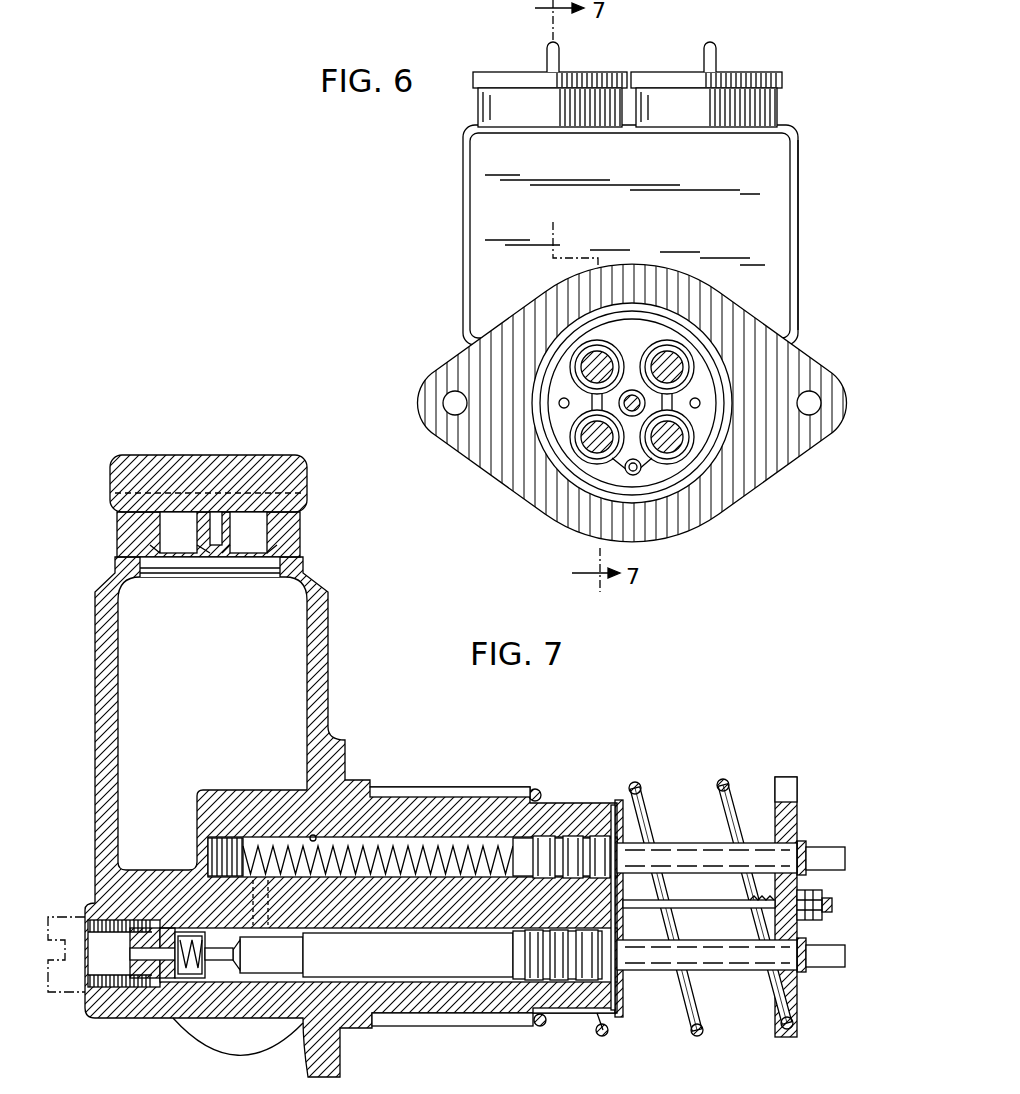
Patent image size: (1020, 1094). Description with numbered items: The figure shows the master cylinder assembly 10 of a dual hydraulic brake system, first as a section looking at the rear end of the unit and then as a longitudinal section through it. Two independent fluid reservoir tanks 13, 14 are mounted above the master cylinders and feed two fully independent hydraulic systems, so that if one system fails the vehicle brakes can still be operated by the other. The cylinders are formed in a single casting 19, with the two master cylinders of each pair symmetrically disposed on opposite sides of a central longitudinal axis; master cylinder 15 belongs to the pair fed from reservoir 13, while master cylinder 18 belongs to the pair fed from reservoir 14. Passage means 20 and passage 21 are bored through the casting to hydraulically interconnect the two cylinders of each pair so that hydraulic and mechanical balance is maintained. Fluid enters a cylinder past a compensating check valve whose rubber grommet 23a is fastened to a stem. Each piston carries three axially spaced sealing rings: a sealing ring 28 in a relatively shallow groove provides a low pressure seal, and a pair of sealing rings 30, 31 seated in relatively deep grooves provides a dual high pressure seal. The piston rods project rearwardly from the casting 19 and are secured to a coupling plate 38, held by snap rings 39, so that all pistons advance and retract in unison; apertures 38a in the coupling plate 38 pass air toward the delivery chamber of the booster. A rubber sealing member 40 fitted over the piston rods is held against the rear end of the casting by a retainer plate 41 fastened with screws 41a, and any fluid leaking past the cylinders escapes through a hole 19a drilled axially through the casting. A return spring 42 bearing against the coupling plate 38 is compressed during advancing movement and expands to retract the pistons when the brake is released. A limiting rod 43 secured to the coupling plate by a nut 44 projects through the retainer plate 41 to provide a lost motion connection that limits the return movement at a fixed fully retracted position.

In FIG. 6, the master cylinder assembly 10 is at (718, 460).
In FIG. 7, the master cylinder assembly 10 is at (402, 765).
In FIG. 6, the fluid reservoir tank 13 is at (463, 197).
In FIG. 7, the fluid reservoir tank 13 is at (329, 630).
In FIG. 6, the fluid reservoir tank 14 is at (800, 202).
In FIG. 7, the master cylinder 15 is at (437, 790).
In FIG. 7, the master cylinder 18 is at (435, 1018).
In FIG. 7, the casting 19 is at (90, 905).
In FIG. 6, the hole 19a is at (640, 478).
In FIG. 7, the passage means 20 is at (286, 872).
In FIG. 7, the passage 21 is at (250, 940).
In FIG. 7, the rubber grommet 23a is at (313, 836).
In FIG. 7, the sealing ring 28 is at (600, 830).
In FIG. 7, the sealing ring 30 is at (527, 830).
In FIG. 7, the sealing ring 31 is at (558, 830).
In FIG. 7, the coupling plate 38 is at (780, 843).
In FIG. 7, the apertures 38a is at (800, 812).
In FIG. 7, the snap rings 39 is at (808, 856).
In FIG. 7, the rubber sealing member 40 is at (618, 803).
In FIG. 7, the retainer plate 41 is at (626, 822).
In FIG. 6, the screws 41a is at (560, 403).
In FIG. 7, the return spring 42 is at (745, 790).
In FIG. 7, the limiting rod 43 is at (700, 908).
In FIG. 7, the nut 44 is at (825, 900).